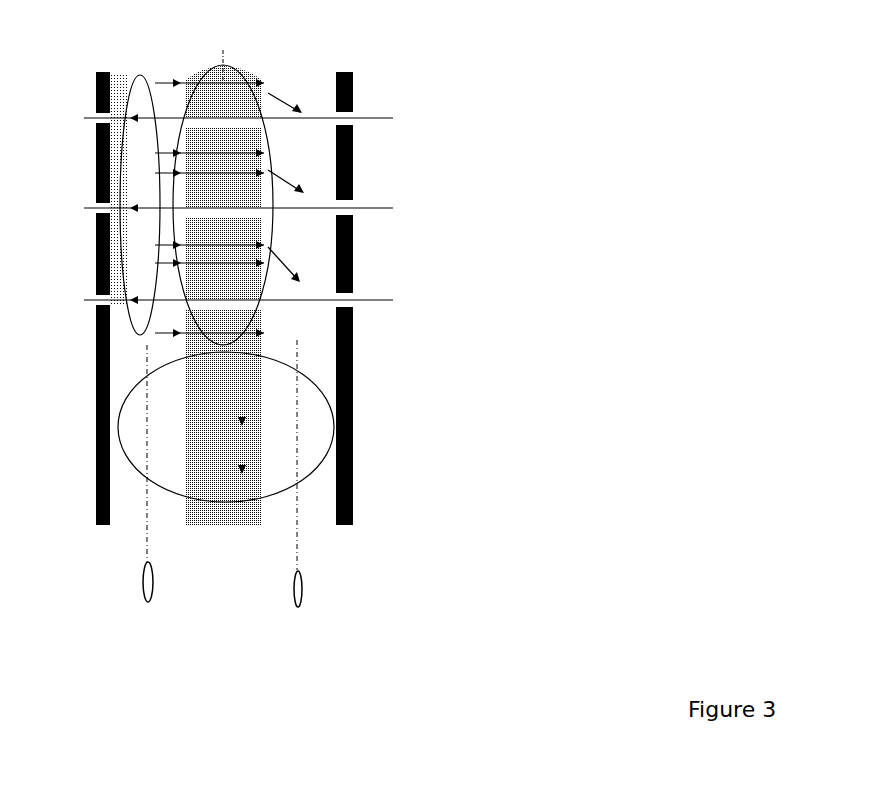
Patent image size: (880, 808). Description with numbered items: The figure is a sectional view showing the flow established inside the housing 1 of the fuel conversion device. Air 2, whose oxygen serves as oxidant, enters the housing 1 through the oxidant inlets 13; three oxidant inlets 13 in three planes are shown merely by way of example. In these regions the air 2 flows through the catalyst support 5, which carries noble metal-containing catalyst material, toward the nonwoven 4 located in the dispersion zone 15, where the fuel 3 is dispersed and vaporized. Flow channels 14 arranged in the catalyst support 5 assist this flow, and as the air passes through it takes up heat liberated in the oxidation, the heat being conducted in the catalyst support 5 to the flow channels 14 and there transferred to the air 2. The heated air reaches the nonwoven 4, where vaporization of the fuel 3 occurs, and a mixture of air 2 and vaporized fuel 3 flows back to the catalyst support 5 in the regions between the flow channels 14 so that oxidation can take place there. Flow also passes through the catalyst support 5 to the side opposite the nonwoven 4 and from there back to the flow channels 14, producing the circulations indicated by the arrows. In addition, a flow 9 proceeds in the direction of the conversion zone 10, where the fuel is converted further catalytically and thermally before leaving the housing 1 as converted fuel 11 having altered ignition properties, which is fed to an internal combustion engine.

The housing 1 is at (270, 67).
The air 2 is at (380, 118).
The fuel 3 is at (226, 212).
The nonwoven 4 is at (118, 78).
The catalyst support 5 is at (224, 76).
The flow (arrows) 9 is at (302, 450).
The conversion zone 10 is at (318, 477).
The converted fuel 11 is at (295, 600).
The oxidant inlets 13 is at (352, 297).
The flow channels 14 is at (258, 140).
The dispersion zone 15 is at (138, 76).